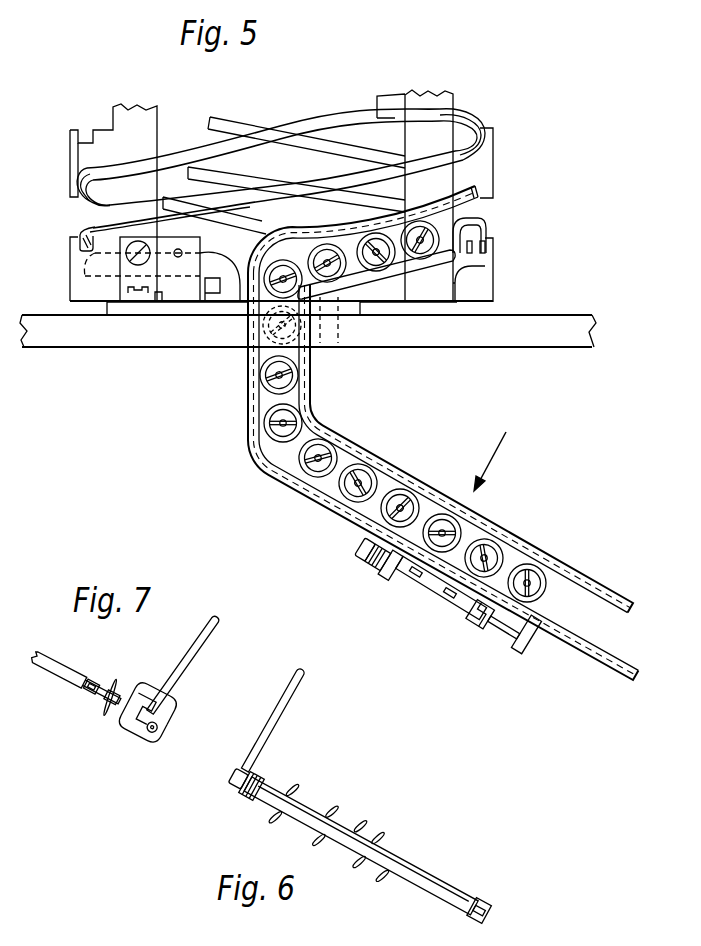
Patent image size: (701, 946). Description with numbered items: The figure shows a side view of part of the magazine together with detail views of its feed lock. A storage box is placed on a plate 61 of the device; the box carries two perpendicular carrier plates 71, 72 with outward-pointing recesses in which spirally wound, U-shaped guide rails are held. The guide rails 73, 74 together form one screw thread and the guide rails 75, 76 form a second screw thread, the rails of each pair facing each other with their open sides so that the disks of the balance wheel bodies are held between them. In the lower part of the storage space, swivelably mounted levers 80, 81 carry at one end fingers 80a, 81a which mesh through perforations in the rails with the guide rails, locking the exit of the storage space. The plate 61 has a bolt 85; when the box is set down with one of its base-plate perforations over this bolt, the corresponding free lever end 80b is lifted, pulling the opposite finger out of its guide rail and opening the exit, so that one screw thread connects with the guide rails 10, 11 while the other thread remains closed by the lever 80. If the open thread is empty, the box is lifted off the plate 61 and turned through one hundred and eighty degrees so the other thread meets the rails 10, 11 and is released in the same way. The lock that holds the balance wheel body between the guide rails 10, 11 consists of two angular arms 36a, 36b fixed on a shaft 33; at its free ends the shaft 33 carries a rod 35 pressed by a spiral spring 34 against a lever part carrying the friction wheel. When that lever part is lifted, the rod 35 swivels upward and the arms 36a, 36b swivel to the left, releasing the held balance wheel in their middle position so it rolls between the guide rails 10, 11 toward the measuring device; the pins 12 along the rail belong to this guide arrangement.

In FIG. 5, the guide rail 10 is at (247, 427).
In FIG. 5, the guide rail 11 is at (313, 405).
In FIG. 7, the guide rail 11 is at (53, 668).
In FIG. 6, the guide rail 11 is at (431, 888).
In FIG. 7, the guide pins 12 is at (100, 707).
In FIG. 6, the guide pins 12 is at (333, 812).
In FIG. 5, the shaft 33 is at (442, 595).
In FIG. 6, the shaft 33 is at (234, 782).
In FIG. 5, the spiral spring 34 is at (383, 572).
In FIG. 6, the spiral spring 34 is at (254, 778).
In FIG. 7, the rod 35 is at (207, 646).
In FIG. 6, the rod 35 is at (289, 704).
In FIG. 5, the angular arm 36a is at (539, 620).
In FIG. 7, the angular arm 36a is at (118, 745).
In FIG. 6, the angular arm 36a is at (387, 873).
In FIG. 5, the angular arm 36b is at (493, 627).
In FIG. 7, the angular arm 36b is at (147, 692).
In FIG. 6, the angular arm 36b is at (364, 820).
In FIG. 5, the plate 61 is at (531, 339).
In FIG. 5, the carrier plate 71 is at (73, 157).
In FIG. 5, the carrier plate 72 is at (483, 163).
In FIG. 5, the guide rail 73 is at (479, 206).
In FIG. 5, the guide rail 74 is at (400, 285).
In FIG. 5, the guide rail 75 is at (182, 152).
In FIG. 5, the guide rail 76 is at (80, 230).
In FIG. 5, the lever 80 is at (207, 301).
In FIG. 5, the finger 80a is at (82, 274).
In FIG. 5, the free end 80b is at (232, 290).
In FIG. 5, the lever 81 is at (460, 274).
In FIG. 5, the finger 81a is at (487, 265).
In FIG. 5, the bolt 85 is at (338, 346).